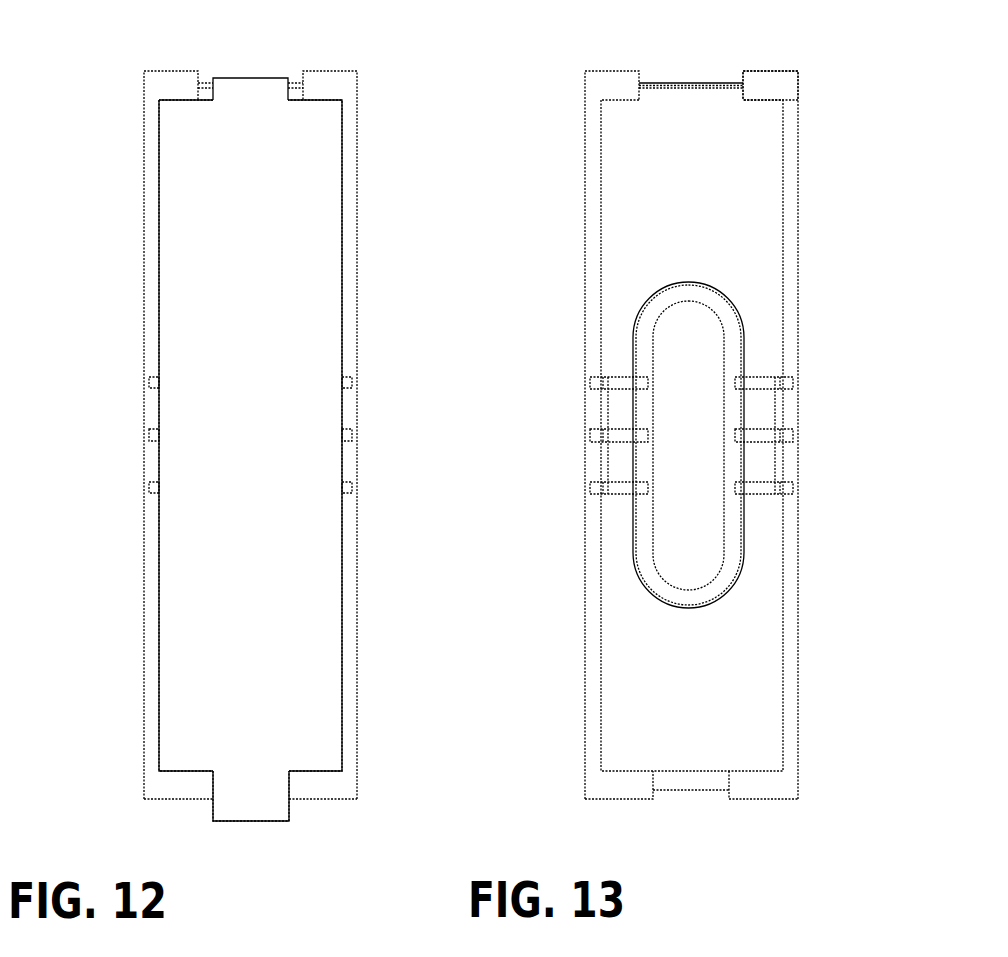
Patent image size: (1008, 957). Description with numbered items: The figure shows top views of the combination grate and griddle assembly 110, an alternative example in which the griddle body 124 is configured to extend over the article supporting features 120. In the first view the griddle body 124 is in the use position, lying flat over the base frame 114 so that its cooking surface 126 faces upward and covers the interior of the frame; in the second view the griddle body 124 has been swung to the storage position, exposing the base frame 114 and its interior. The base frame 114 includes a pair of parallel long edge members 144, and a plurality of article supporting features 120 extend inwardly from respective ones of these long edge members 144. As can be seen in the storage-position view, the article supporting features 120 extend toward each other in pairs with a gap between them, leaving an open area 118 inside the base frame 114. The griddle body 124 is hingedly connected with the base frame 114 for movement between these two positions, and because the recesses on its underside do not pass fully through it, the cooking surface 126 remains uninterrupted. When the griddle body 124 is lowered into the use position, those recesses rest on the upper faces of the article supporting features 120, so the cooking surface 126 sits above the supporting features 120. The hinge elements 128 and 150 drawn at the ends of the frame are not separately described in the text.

In FIG. 12, the combination grate and griddle assembly 110 is at (394, 97).
In FIG. 13, the base frame 114 is at (772, 86).
In FIG. 12, the open area 118 is at (322, 790).
In FIG. 13, the open area 118 is at (668, 188).
In FIG. 12, the article supporting features 120 is at (149, 488).
In FIG. 13, the article supporting features 120 is at (590, 487).
In FIG. 12, the griddle body 124 is at (226, 174).
In FIG. 12, the cooking surface 126 is at (243, 248).
In FIG. 12, the top tab 128 is at (251, 68).
In FIG. 12, the parallel long edge members 144 is at (148, 310).
In FIG. 13, the parallel long edge members 144 is at (592, 260).
In FIG. 13, the top connecting strip 150 is at (700, 82).